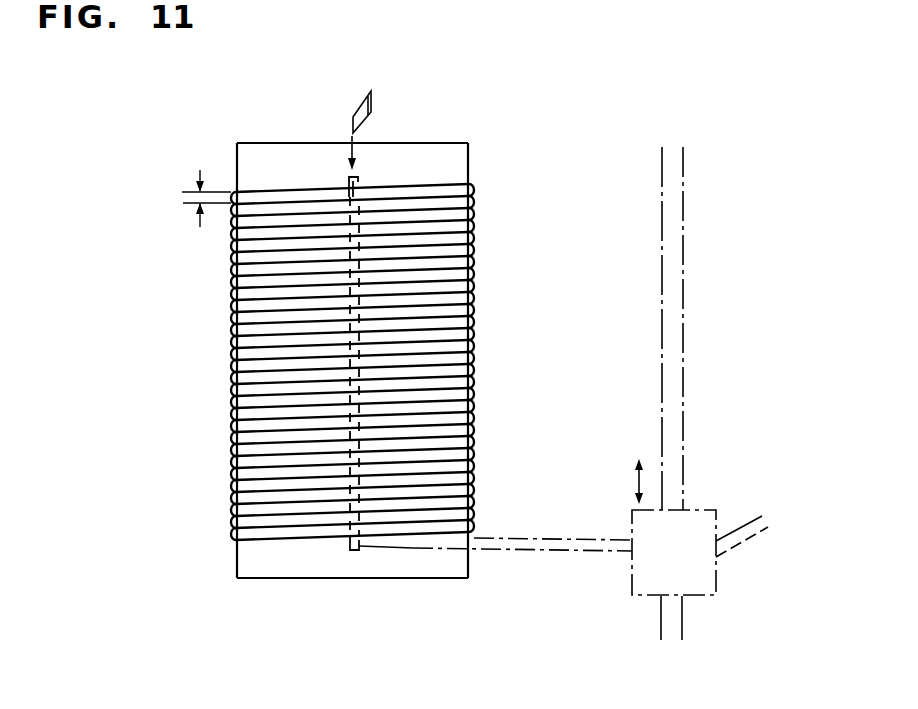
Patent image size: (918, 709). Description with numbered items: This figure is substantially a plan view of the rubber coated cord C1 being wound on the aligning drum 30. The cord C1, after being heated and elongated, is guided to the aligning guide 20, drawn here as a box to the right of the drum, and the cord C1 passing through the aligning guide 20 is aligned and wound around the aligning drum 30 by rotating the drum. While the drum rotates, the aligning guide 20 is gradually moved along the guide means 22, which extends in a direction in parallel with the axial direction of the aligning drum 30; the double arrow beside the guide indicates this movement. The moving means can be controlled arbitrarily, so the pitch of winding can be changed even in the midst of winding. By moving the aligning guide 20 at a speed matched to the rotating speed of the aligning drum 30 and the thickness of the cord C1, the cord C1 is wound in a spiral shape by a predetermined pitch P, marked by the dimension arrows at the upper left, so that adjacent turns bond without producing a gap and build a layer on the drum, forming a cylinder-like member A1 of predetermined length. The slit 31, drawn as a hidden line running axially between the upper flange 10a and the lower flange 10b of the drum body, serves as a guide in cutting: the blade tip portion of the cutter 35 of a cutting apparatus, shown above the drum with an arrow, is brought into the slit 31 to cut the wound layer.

The aligning drum 30 is at (476, 156).
The upper flange of bobbin 10a is at (398, 193).
The lower flange of bobbin 10b is at (330, 538).
The rubber coated cord C1 is at (447, 247).
The cylinder-like member A1 is at (260, 458).
The pitch P is at (187, 202).
The slit 31 is at (348, 184).
The cutter 35 is at (354, 108).
The guide means 22 is at (673, 272).
The aligning guide 20 is at (702, 520).